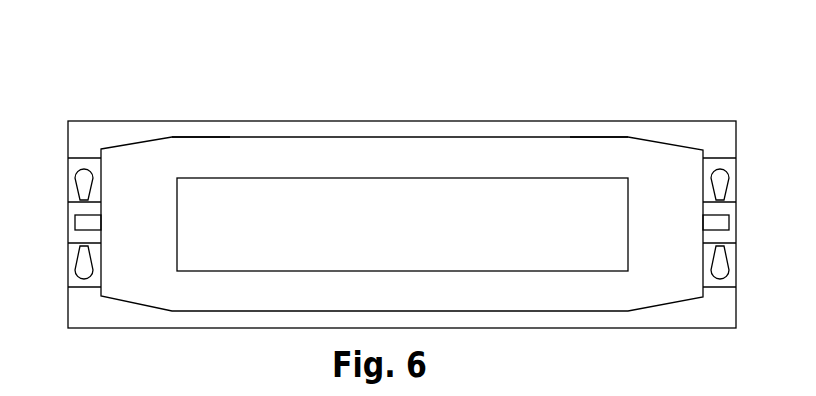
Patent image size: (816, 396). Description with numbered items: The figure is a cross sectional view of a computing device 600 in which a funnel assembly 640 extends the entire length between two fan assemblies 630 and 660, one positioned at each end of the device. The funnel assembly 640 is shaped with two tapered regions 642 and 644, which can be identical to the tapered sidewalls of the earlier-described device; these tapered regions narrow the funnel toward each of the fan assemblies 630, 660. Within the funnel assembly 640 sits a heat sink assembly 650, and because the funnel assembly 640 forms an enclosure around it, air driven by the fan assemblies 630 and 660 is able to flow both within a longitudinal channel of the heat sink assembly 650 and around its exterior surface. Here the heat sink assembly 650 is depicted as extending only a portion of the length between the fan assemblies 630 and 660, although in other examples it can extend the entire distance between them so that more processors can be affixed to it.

The computing device 600 is at (98, 109).
The fan assembly 630 is at (66, 172).
The funnel assembly 640 is at (234, 143).
The tapered region 642 is at (203, 134).
The tapered region 644 is at (602, 133).
The heat sink assembly 650 is at (405, 174).
The fan assembly 660 is at (737, 173).